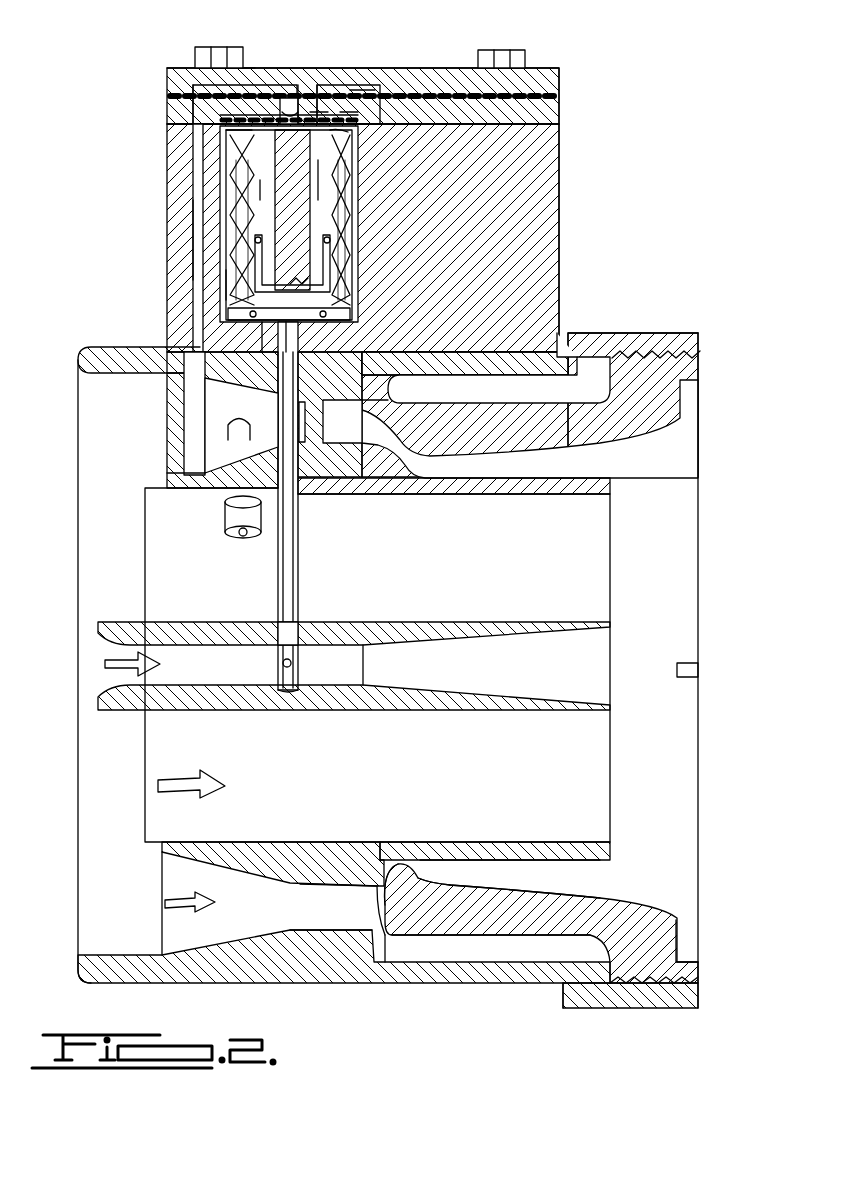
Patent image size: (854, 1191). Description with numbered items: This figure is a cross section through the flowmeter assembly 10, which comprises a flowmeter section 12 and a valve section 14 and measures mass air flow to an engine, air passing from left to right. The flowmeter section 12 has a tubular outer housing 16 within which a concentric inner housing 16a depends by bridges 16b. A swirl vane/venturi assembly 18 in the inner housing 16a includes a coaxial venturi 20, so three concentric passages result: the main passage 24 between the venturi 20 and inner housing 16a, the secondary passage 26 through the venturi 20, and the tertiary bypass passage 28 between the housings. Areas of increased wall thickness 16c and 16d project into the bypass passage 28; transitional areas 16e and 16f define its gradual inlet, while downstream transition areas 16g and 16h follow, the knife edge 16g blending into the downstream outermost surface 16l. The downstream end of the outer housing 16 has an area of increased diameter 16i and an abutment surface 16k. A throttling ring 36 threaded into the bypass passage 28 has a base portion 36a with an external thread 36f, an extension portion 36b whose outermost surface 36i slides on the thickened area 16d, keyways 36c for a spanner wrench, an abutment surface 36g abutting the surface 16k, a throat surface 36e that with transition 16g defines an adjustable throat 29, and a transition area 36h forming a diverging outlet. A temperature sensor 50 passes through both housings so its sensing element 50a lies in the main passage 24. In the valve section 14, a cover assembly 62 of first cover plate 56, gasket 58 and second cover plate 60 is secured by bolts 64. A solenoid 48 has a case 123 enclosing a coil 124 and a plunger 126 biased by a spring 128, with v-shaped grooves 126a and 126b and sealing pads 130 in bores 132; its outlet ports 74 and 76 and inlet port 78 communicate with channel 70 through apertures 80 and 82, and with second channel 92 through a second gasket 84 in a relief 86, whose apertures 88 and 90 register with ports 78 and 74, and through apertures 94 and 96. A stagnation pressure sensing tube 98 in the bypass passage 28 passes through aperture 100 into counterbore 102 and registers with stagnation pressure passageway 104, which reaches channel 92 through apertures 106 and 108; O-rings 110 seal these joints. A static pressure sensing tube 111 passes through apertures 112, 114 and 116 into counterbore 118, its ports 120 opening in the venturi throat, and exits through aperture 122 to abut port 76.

The flowmeter assembly 10 is at (576, 247).
The flowmeter section 12 is at (80, 354).
The valve section 14 is at (562, 168).
The tubular outer housing 16 is at (684, 334).
The inner housing 16a is at (614, 486).
The bridges 16b is at (345, 443).
The area of increased wall thickness 16c is at (300, 890).
The second area of increased wall thickness 16d is at (275, 915).
The transitional area 16e is at (228, 856).
The transitional area 16f is at (200, 948).
The transition area 16g is at (390, 866).
The transition area 16h is at (375, 955).
The area of increased diameter 16i is at (632, 352).
The abutment surface 16k is at (580, 345).
The downstream radially outermost surface 16l is at (470, 865).
The swirl vane/venturi assembly 18 is at (142, 608).
The venturi 20 is at (185, 712).
The main passage 24 is at (185, 790).
The secondary passage 26 is at (155, 668).
The tertiary passage 28 is at (185, 900).
The throat 29 is at (358, 901).
The throttling ring 36 is at (700, 741).
The base portion 36a is at (612, 902).
The extension portion 36b is at (440, 950).
The keyways 36c is at (692, 400).
The throat surface 36e is at (415, 888).
The external thread 36f is at (642, 985).
The abutment surface 36g is at (562, 985).
The transition area 36h is at (500, 900).
The radially outermost surface 36i is at (405, 965).
The solenoid 48 is at (203, 241).
The temperature sensor 50 is at (225, 510).
The temperature sensing element 50a is at (240, 536).
The first cover plate 56 is at (548, 118).
The gasket 58 is at (562, 97).
The second cover plate 60 is at (560, 84).
The cover assembly 62 is at (556, 66).
The bolts 64 is at (217, 47).
The channel 70 is at (322, 110).
The outlet port 74 is at (239, 143).
The outlet port 76 is at (260, 352).
The inlet port 78 is at (348, 132).
The aperture 80 is at (318, 112).
The aperture 82 is at (312, 96).
The second gasket 84 is at (360, 100).
The relief 86 is at (348, 112).
The aperture 88 is at (338, 96).
The aperture 90 is at (292, 112).
The second channel 92 is at (250, 68).
The aperture 94 is at (296, 96).
The aperture 96 is at (300, 85).
The stagnation pressure sensing tube 98 is at (190, 440).
The aperture 100 is at (182, 375).
The counterbore 102 is at (175, 472).
The stagnation pressure passageway 104 is at (198, 256).
The aperture 106 is at (198, 102).
The aperture 108 is at (238, 88).
The O-rings 110 is at (200, 120).
The static pressure sensing tube 111 is at (300, 542).
The aperture 112 is at (320, 368).
The aperture 114 is at (302, 462).
The aperture 116 is at (300, 640).
The counterbore 118 is at (310, 692).
The static pressure sensing ports 120 is at (280, 663).
The aperture 122 is at (312, 318).
The solenoid case 123 is at (240, 276).
The actuating coil 124 is at (245, 222).
The plunger 126 is at (303, 211).
The v-shaped groove 126a is at (255, 190).
The v-shaped groove 126b is at (320, 175).
The spring 128 is at (235, 315).
The resilient sealing pads 130 is at (230, 150).
The bores 132 is at (258, 180).